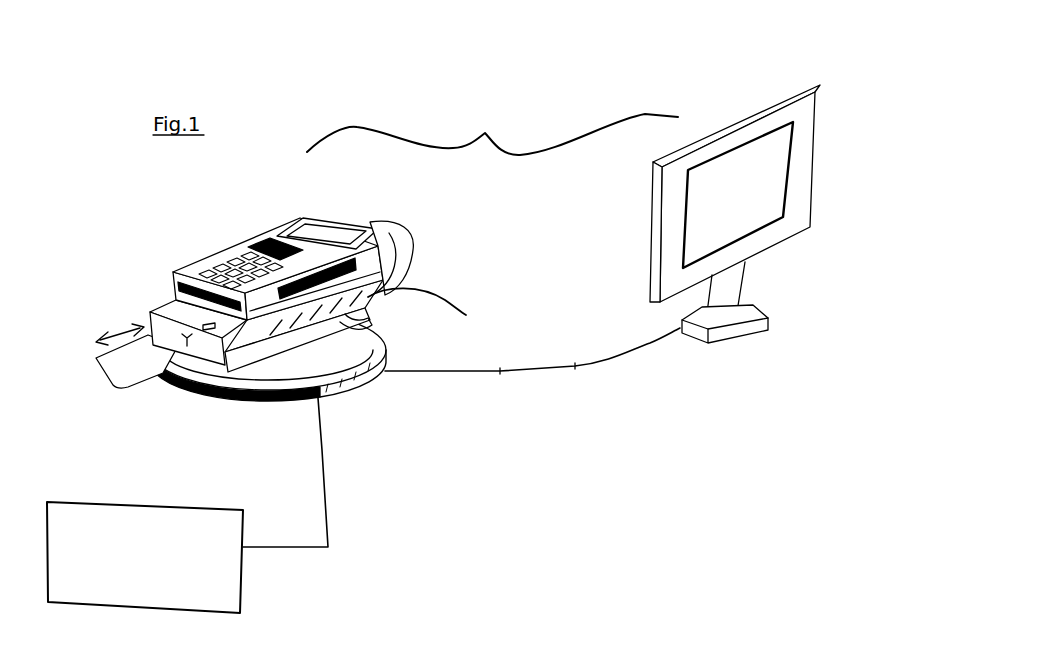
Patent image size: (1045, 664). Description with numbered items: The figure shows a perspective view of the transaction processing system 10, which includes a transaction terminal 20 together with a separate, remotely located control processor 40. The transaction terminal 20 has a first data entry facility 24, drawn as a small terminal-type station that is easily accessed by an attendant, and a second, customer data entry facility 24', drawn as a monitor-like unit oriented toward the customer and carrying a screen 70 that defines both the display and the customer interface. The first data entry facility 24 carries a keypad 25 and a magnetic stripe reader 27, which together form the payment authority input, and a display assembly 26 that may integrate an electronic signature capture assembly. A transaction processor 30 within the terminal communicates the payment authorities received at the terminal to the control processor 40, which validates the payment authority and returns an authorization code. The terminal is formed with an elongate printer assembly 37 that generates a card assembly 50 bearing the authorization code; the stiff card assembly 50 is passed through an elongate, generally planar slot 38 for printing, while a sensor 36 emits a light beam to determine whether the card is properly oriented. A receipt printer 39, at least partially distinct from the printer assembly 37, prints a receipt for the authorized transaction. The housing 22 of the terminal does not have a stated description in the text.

The transaction processing system 10 is at (495, 426).
The transaction terminal 20 is at (497, 103).
The card reader housing 22 is at (275, 243).
The first data entry facility 24 is at (279, 301).
The customer data entry facility 24' is at (789, 211).
The keypad 25 is at (203, 268).
The display assembly 26 is at (262, 243).
The magnetic stripe reader 27 is at (362, 262).
The transaction processor 30 is at (431, 311).
The sensor 36 is at (168, 313).
The printer assembly 37 is at (358, 330).
The slot 38 is at (193, 376).
The receipt printer 39 is at (352, 215).
The control processor 40 is at (187, 505).
The card assembly 50 is at (152, 383).
The screen 70 is at (735, 193).